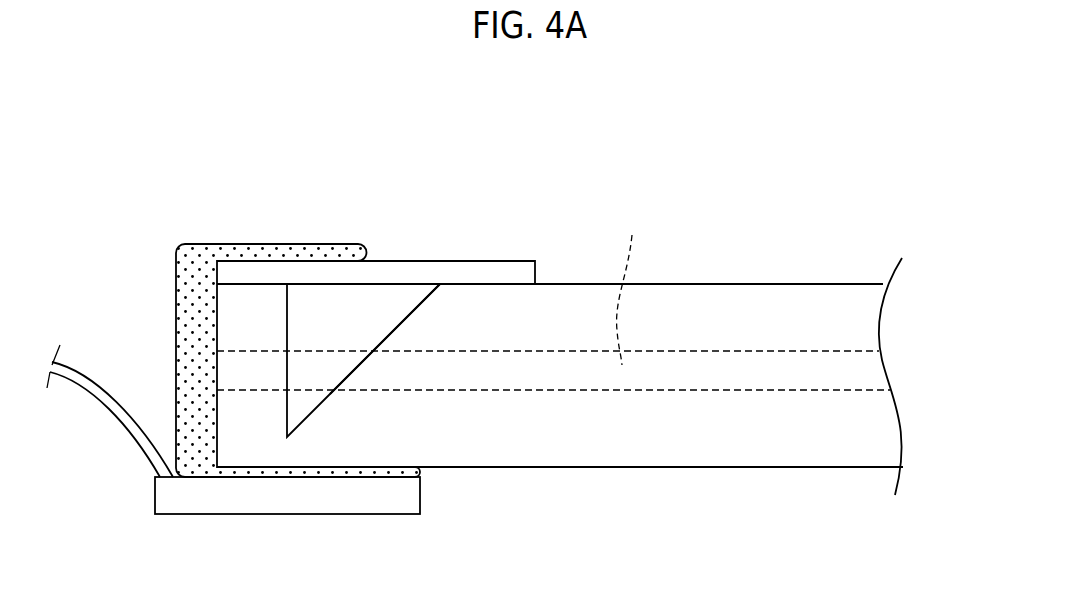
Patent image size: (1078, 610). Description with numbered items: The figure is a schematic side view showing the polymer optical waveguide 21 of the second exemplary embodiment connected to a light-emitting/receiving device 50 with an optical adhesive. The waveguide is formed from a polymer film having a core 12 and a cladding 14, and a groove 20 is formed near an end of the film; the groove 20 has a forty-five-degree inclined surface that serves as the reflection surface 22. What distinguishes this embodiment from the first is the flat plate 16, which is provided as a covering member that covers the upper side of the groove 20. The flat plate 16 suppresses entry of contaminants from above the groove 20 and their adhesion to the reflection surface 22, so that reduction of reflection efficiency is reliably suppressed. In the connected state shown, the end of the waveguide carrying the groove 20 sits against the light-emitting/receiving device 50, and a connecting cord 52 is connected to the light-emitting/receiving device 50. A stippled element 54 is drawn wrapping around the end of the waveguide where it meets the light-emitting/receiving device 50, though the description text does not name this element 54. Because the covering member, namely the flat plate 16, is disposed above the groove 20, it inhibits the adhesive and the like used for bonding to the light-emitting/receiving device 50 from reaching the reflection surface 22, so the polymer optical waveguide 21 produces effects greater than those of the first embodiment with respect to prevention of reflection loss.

The core 12 is at (631, 285).
The cladding 14 is at (788, 298).
The flat plate 16 is at (458, 270).
The groove 20 is at (328, 315).
The polymer optical waveguide 21 is at (698, 233).
The reflection surface 22 is at (402, 317).
The light-emitting/receiving device 50 is at (318, 508).
The connecting cord 52 is at (117, 400).
The frame member 54 is at (187, 299).